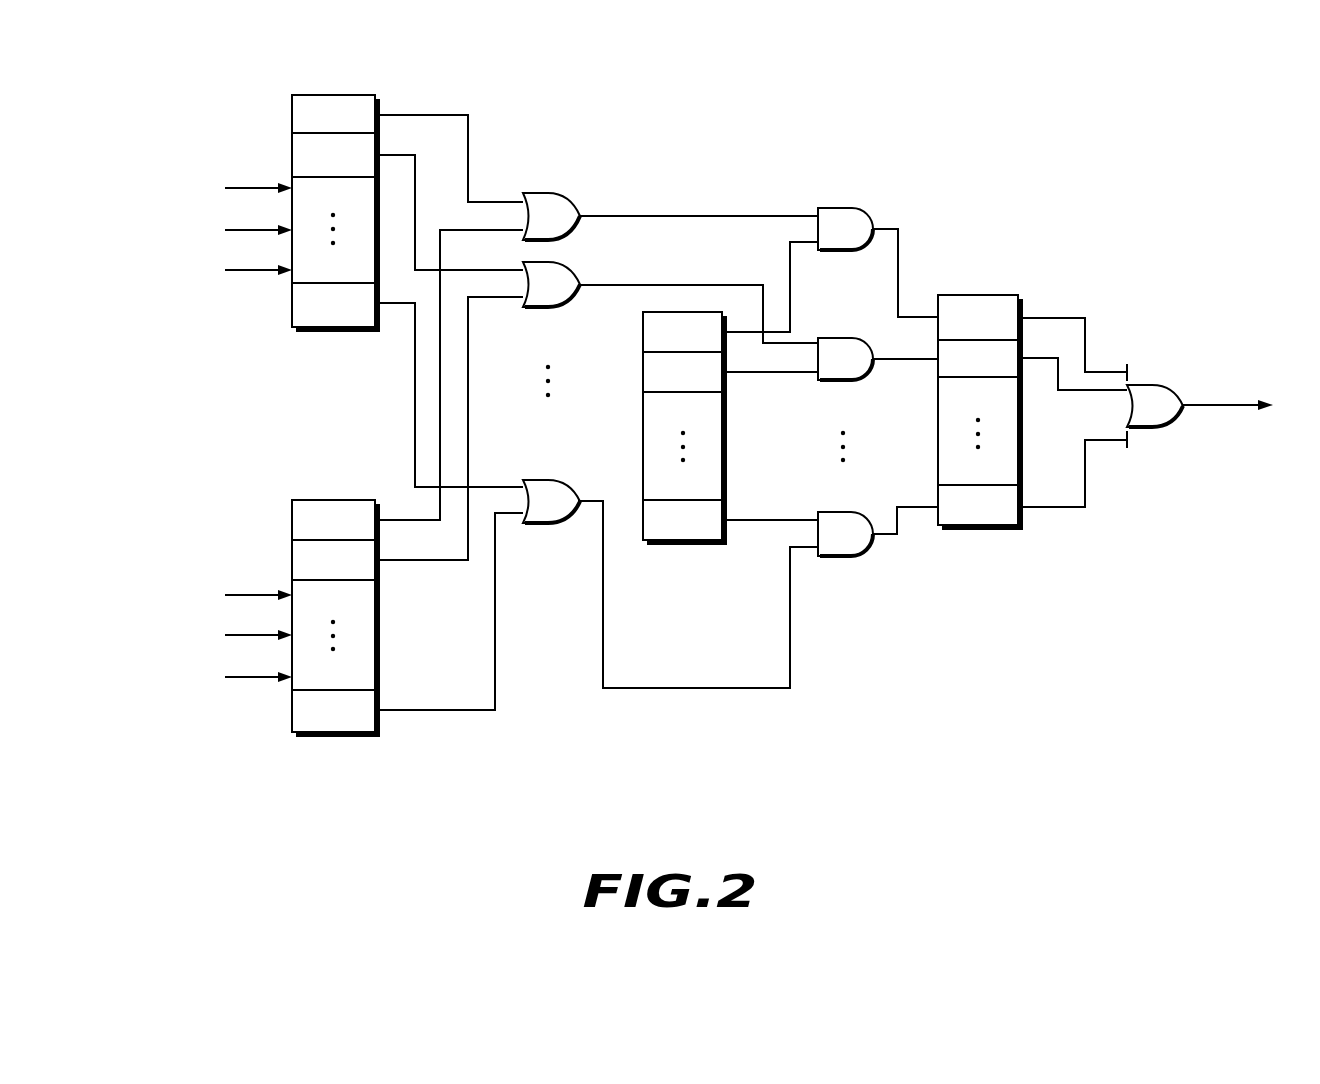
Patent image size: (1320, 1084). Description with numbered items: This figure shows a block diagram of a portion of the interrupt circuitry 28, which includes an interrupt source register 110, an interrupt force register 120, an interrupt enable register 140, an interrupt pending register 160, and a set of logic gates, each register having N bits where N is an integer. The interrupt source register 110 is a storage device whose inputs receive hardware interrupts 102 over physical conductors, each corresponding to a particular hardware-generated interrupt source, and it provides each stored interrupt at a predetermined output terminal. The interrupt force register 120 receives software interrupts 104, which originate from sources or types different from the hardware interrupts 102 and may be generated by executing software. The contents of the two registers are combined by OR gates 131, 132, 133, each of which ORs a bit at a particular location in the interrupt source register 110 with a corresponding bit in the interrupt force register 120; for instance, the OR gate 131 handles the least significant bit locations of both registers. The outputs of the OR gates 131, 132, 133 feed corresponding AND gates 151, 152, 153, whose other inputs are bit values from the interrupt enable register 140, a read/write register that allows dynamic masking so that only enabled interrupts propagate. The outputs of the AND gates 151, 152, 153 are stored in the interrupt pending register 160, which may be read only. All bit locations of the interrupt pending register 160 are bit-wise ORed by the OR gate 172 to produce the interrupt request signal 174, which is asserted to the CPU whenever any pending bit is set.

The interrupt circuitry 28 is at (724, 810).
The hardware interrupts 102 is at (198, 214).
The software interrupts 104 is at (198, 619).
The interrupt source register 110 is at (318, 333).
The interrupt force register 120 is at (316, 738).
The OR gate 131 is at (552, 194).
The OR gate 132 is at (552, 307).
The OR gate 133 is at (553, 480).
The interrupt enable register 140 is at (667, 546).
The AND gate 151 is at (838, 208).
The AND gate 152 is at (838, 338).
The AND gate 153 is at (840, 512).
The interrupt pending register 160 is at (969, 531).
The OR gate 172 is at (1160, 427).
The interrupt request signal 174 is at (1202, 402).